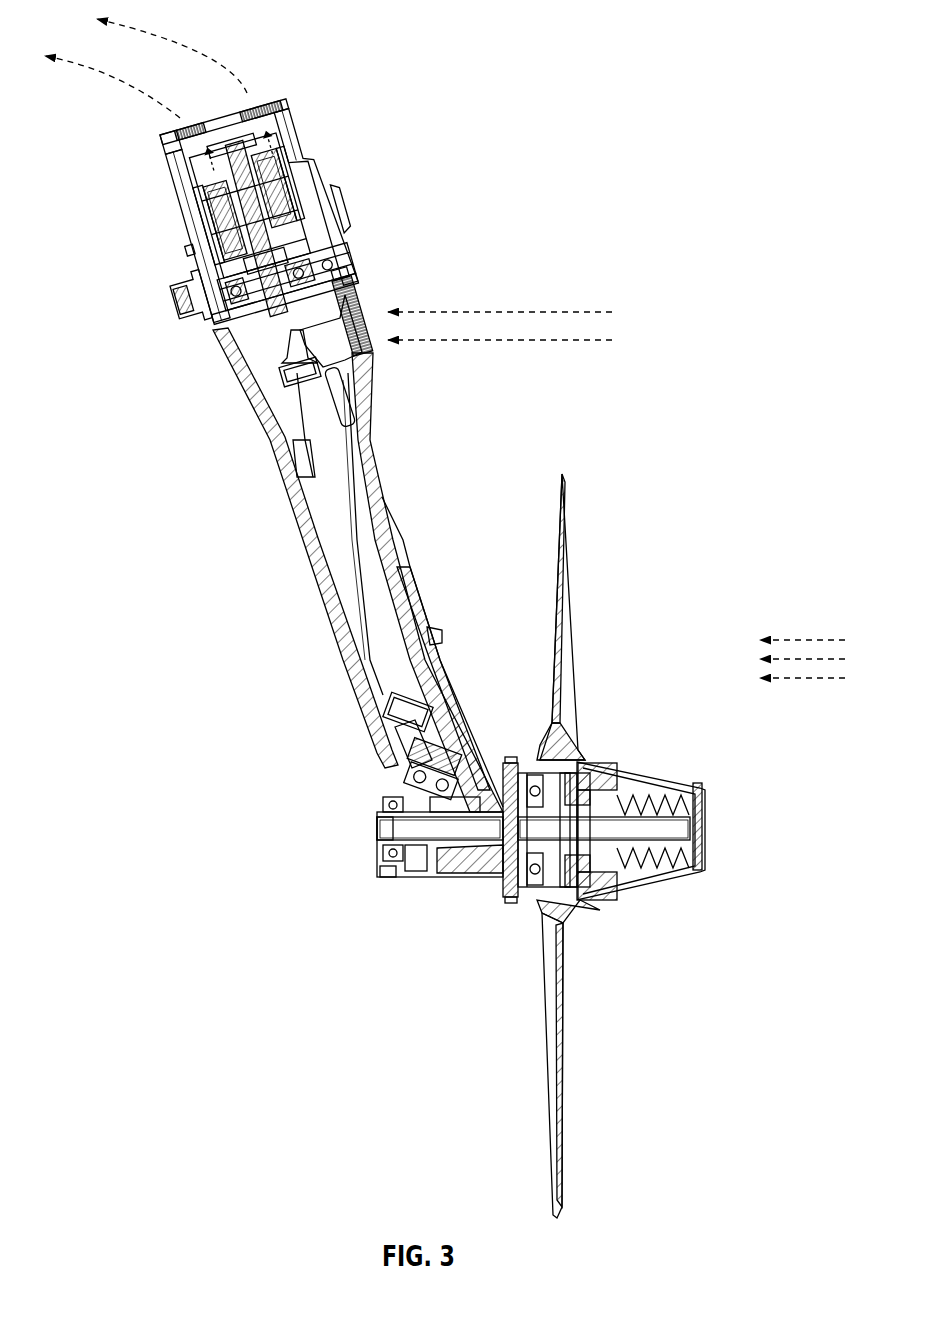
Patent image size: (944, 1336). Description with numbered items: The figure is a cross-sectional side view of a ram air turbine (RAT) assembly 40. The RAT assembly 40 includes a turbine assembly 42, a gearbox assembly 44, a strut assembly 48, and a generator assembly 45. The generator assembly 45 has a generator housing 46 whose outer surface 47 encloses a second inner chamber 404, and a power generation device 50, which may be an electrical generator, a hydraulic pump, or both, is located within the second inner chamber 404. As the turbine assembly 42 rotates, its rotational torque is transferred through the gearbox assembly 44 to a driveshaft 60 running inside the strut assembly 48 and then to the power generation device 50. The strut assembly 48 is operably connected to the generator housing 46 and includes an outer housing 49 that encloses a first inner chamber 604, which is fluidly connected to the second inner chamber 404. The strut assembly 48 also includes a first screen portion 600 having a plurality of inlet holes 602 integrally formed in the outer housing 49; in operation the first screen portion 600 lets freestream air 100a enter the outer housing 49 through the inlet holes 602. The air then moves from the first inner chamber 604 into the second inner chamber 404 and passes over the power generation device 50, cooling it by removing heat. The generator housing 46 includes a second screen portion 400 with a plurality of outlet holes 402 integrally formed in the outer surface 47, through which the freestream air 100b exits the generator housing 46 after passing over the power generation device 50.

The ram air turbine (RAT) assembly 40 is at (678, 134).
The turbine assembly 42 is at (709, 779).
The gearbox assembly 44 is at (372, 797).
The generator assembly 45 is at (341, 185).
The generator housing 46 is at (183, 218).
The outer surface 47 is at (294, 137).
The strut assembly 48 is at (268, 482).
The outer housing 49 is at (305, 519).
The power generation device 50 is at (200, 267).
The driveshaft 60 is at (340, 588).
The second screen portion 400 is at (251, 92).
The outlet holes 402 is at (174, 156).
The second inner chamber 404 is at (278, 116).
The first screen portion 600 is at (390, 289).
The inlet holes 602 is at (364, 352).
The first inner chamber 604 is at (325, 331).
The freestream air 100a is at (538, 341).
The freestream air 100b is at (115, 79).